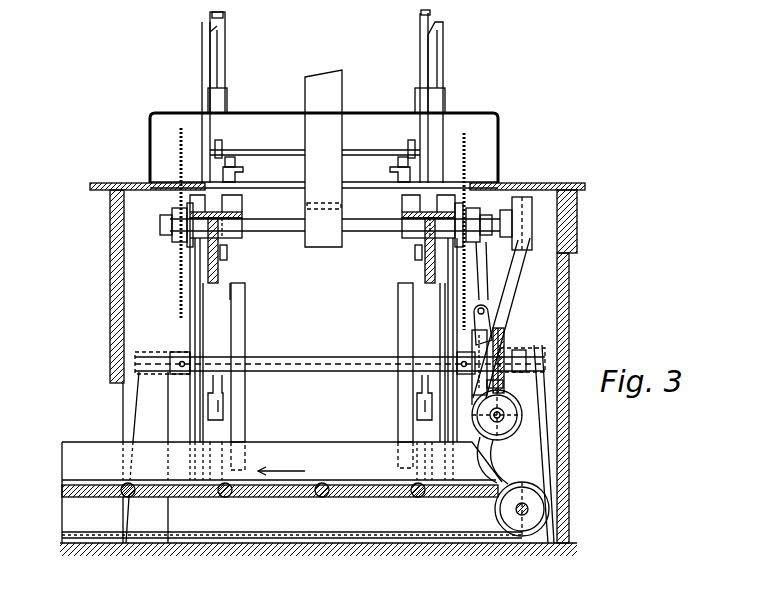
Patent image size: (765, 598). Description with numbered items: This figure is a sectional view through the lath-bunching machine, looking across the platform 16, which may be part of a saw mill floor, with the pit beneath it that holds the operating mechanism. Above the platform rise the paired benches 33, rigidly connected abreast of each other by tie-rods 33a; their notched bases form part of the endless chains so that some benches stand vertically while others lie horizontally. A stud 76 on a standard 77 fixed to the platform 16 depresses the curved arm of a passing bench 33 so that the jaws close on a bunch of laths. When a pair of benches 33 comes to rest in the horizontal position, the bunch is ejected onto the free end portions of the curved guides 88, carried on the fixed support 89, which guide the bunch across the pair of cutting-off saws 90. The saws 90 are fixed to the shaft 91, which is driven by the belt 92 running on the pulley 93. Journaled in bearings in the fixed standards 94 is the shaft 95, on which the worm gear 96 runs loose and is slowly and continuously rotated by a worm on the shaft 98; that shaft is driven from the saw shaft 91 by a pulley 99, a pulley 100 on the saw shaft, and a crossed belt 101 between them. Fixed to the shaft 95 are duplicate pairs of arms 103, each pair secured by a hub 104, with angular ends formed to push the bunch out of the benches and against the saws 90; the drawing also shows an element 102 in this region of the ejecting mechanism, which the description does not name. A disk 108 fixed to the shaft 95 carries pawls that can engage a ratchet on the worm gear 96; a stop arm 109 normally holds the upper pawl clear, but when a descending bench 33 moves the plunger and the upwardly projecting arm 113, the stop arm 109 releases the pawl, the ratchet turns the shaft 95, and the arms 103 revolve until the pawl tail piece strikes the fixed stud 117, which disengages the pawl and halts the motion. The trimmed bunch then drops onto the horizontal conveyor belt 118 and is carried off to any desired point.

The platform 16 is at (572, 187).
The benches 33 is at (205, 97).
The tie-rods 33a is at (293, 152).
The stud 76 is at (226, 158).
The standard 77 is at (236, 170).
The curved guides 88 is at (247, 334).
The fixed support 89 is at (80, 449).
The cutting-off saws 90 is at (183, 299).
The shaft 91 is at (380, 226).
The belt 92 is at (333, 98).
The pulley 93 is at (340, 214).
The standards 94 is at (147, 418).
The shaft 95 is at (336, 366).
The worm gear 96 is at (505, 348).
The shaft 98 is at (501, 424).
The pulley 99 is at (509, 415).
The pulley 100 is at (532, 211).
The crossed belt 101 is at (513, 278).
The rack 102 is at (502, 330).
The arms 103 is at (196, 428).
The hub 104 is at (482, 400).
The disk 108 is at (470, 340).
The stop arm 109 is at (486, 306).
The arm 113 is at (479, 272).
The fixed stud 117 is at (503, 383).
The conveyor belt 118 is at (343, 482).